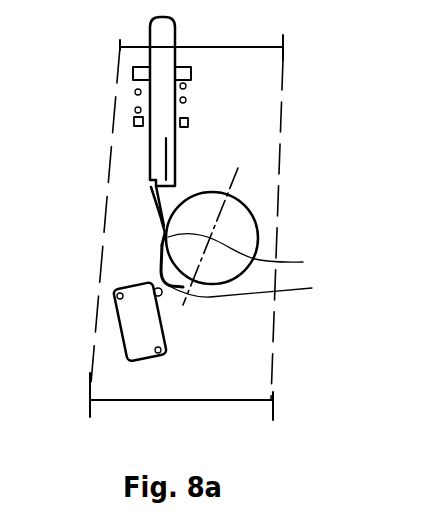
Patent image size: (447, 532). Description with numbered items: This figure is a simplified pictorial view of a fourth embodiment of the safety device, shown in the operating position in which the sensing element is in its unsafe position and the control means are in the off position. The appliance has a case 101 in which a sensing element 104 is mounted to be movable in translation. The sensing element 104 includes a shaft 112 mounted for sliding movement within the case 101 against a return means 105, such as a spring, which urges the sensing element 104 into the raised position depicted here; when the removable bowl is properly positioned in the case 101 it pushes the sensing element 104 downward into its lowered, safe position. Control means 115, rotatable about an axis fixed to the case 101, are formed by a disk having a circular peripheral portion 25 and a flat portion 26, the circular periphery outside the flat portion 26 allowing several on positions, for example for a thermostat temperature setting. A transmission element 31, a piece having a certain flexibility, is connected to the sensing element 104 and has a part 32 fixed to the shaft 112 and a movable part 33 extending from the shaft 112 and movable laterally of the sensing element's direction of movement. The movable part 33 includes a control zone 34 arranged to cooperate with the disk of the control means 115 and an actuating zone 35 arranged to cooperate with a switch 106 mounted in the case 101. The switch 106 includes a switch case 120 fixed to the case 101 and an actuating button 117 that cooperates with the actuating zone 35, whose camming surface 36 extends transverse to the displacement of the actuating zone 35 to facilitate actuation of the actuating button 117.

The case 101 is at (248, 70).
The return means 105 is at (186, 100).
The shaft 112 is at (160, 33).
The sensing element 104 is at (137, 141).
The part 32 is at (165, 168).
The movable part 33 is at (142, 207).
The transmission element 31 is at (141, 231).
The control zone 34 is at (162, 237).
The actuating zone 35 is at (151, 277).
The circular peripheral portion 25 is at (178, 198).
The control means 115 is at (235, 220).
The flat portion 26 is at (255, 252).
The camming surface 36 is at (255, 290).
The actuating button 117 is at (161, 296).
The switch 106 is at (112, 351).
The switch case 120 is at (164, 333).